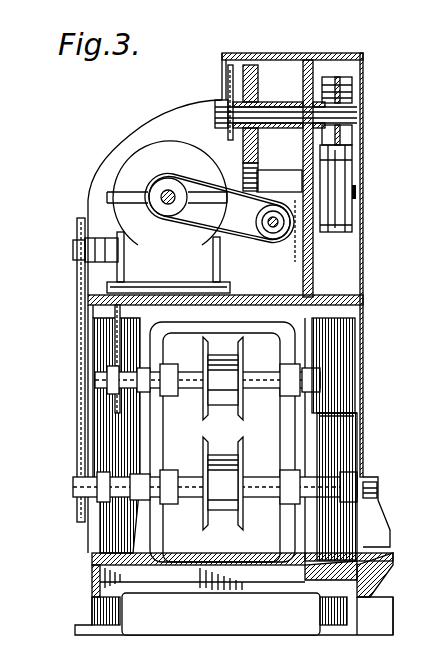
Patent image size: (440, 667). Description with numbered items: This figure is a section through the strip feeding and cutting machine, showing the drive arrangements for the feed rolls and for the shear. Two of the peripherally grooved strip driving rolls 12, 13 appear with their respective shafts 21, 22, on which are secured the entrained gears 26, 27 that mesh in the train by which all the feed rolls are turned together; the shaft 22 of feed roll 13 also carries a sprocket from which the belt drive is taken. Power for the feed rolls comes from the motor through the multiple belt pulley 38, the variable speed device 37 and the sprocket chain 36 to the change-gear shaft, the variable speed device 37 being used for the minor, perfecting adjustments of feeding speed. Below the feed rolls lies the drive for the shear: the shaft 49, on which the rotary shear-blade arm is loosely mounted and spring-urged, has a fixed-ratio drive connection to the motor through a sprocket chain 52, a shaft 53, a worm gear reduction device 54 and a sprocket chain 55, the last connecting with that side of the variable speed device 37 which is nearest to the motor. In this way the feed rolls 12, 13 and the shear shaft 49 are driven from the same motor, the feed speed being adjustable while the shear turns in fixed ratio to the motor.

The strip driving roll 12 is at (352, 170).
The strip driving roll 13 is at (350, 92).
The shaft of feed roll 21 is at (356, 192).
The shaft of feed roll 22 is at (352, 112).
The gear 26 is at (258, 172).
The gear 27 is at (258, 87).
The sprocket chain 36 is at (118, 343).
The variable speed device 37 is at (200, 408).
The multiple belt pulley 38 is at (345, 445).
The shaft 49 is at (273, 228).
The sprocket chain 52 is at (245, 242).
The shaft 53 is at (166, 193).
The worm gear reduction device 54 is at (168, 217).
The sprocket chain 55 is at (84, 340).